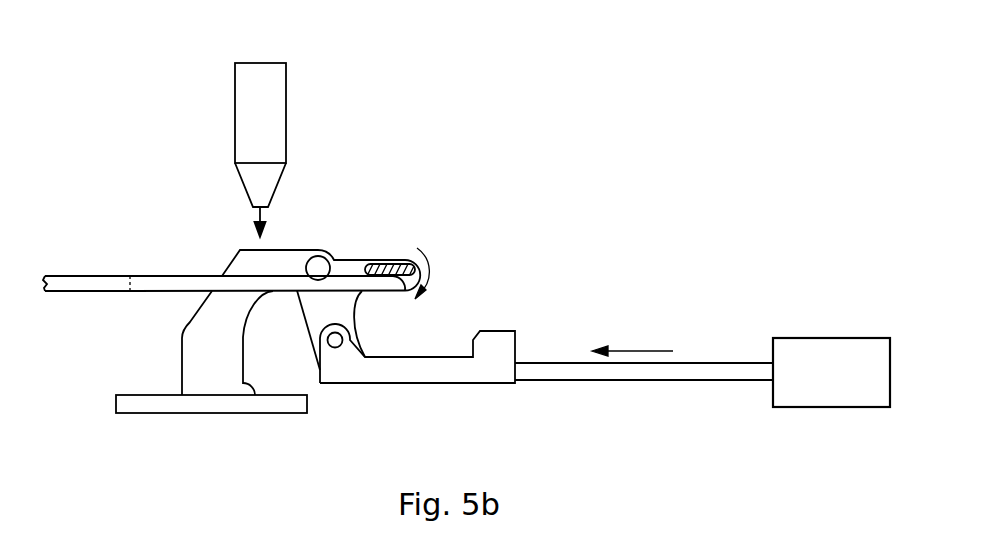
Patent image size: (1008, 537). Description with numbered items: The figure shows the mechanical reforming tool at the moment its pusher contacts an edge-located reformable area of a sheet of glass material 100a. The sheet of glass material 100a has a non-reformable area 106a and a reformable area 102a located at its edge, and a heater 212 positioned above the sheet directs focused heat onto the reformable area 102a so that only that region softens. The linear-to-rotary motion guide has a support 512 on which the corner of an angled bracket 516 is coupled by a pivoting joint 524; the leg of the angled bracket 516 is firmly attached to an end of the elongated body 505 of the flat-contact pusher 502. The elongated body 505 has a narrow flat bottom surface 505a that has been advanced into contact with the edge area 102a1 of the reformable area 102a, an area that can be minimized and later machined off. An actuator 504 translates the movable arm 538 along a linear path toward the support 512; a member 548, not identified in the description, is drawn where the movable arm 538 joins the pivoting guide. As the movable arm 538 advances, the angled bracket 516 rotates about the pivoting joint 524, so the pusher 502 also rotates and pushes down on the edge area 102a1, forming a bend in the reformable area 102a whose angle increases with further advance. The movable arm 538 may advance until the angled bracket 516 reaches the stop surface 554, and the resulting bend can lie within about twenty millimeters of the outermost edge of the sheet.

The heater 212 is at (255, 62).
The sheet of glass material 100a is at (232, 260).
The non-reformable area 106a is at (90, 285).
The reformable area 102a is at (183, 283).
The edge area 102a1 is at (378, 268).
The angled bracket 516 is at (348, 267).
The pivoting joint 524 is at (322, 263).
The flat-contact pusher 502 is at (403, 263).
The elongated body 505 is at (403, 263).
The flat bottom surface 505a is at (398, 277).
The support 512 is at (213, 385).
The stop surface 554 is at (257, 388).
The actuating arm 548 is at (440, 373).
The movable arm 538 is at (665, 373).
The actuator 504 is at (822, 350).